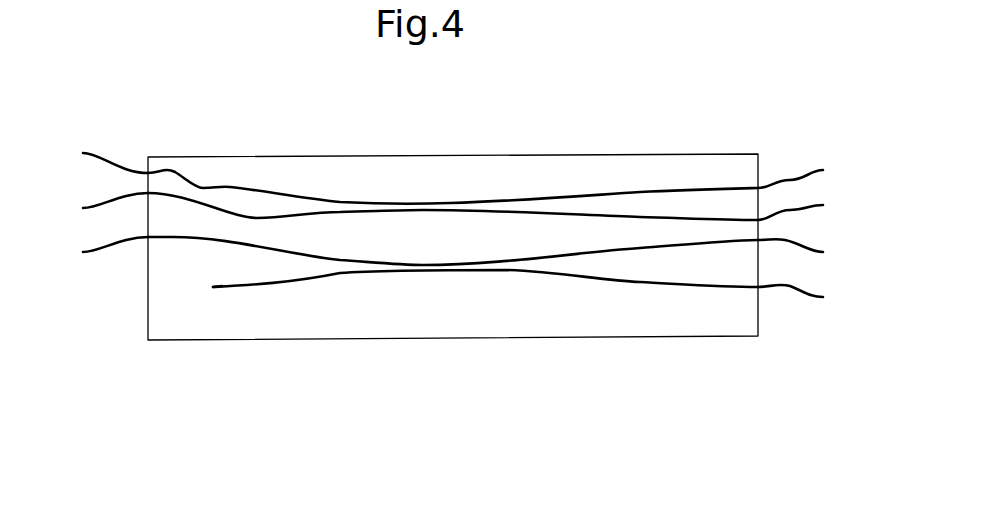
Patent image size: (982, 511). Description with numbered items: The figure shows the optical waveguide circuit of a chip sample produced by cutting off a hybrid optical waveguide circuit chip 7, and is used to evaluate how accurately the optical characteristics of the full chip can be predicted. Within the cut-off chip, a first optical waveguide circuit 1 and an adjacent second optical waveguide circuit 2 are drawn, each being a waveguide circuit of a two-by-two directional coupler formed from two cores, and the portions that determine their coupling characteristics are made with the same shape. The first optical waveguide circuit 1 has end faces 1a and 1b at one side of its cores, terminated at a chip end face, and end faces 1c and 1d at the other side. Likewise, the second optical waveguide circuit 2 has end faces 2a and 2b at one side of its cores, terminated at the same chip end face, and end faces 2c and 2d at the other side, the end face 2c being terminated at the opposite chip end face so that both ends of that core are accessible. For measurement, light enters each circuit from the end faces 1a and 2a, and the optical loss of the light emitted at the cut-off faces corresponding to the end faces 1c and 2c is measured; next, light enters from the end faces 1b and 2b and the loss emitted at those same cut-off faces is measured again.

The hybrid optical waveguide circuit chip 7 is at (607, 125).
The first optical waveguide circuit 1 is at (422, 277).
The second optical waveguide circuit 2 is at (458, 197).
The end face 1a is at (806, 245).
The end face 1b is at (807, 290).
The end face 1c is at (98, 249).
The end face 1d is at (212, 292).
The end face 2a is at (806, 171).
The end face 2b is at (807, 205).
The end face 2c is at (98, 157).
The end face 2d is at (98, 205).